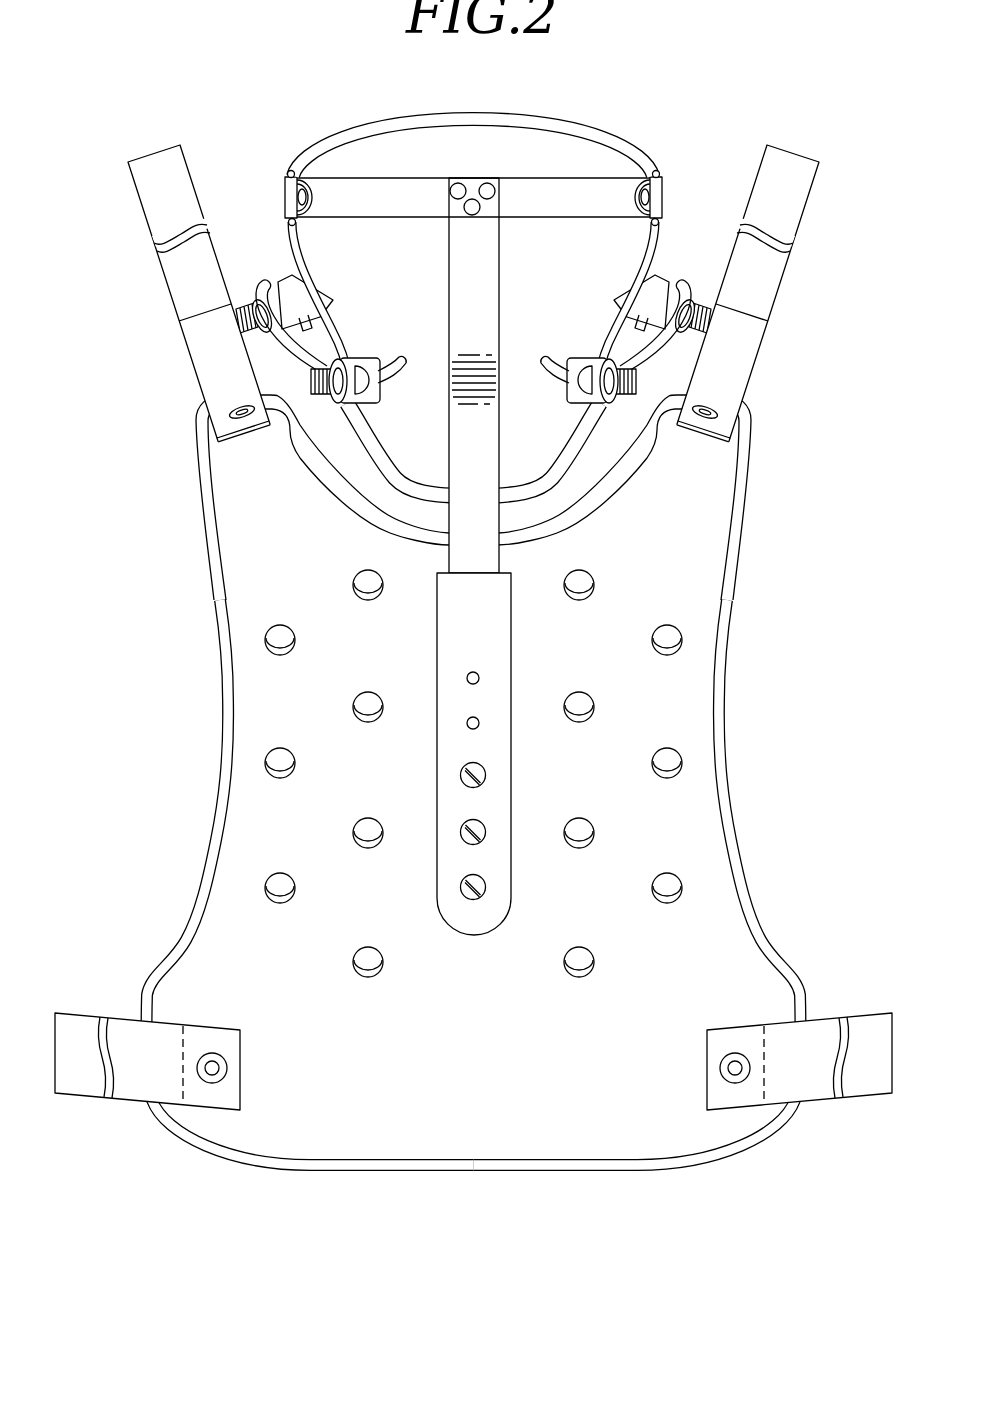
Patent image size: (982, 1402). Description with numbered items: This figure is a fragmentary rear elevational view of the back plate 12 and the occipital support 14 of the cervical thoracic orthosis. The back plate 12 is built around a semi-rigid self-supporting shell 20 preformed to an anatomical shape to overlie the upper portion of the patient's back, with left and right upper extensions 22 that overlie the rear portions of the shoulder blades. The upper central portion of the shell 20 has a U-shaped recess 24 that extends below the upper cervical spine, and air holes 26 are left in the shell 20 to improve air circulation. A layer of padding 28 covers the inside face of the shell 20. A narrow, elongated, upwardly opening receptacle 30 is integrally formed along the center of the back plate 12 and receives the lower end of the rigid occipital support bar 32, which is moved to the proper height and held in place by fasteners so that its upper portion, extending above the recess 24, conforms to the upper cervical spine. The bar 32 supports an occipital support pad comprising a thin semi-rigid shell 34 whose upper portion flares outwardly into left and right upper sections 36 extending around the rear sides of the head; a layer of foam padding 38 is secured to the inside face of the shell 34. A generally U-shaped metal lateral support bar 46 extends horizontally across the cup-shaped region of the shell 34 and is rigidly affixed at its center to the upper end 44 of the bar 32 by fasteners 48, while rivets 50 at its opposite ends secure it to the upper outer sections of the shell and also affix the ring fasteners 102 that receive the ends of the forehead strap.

The back plate 12 is at (492, 1059).
The occipital support 14 is at (345, 253).
The shell 20 is at (668, 700).
The shoulder portion 22 is at (252, 476).
The U-shaped recess 24 is at (387, 467).
The air holes 26 is at (586, 947).
The layer of padding 28 is at (750, 894).
The receptacle 30 is at (488, 636).
The occipital support bar 32 is at (483, 523).
The shell 34 is at (570, 299).
The upper sections 36 is at (292, 228).
The padding 38 is at (620, 132).
The upper end 44 is at (490, 210).
The lateral support bar 46 is at (433, 208).
The fasteners 48 is at (487, 183).
The rivets 50 is at (290, 192).
The ring fasteners 102 is at (293, 175).